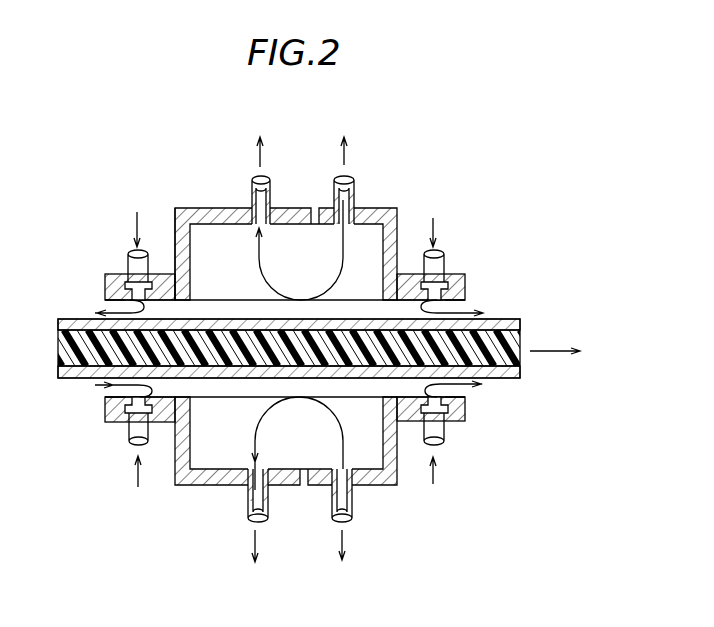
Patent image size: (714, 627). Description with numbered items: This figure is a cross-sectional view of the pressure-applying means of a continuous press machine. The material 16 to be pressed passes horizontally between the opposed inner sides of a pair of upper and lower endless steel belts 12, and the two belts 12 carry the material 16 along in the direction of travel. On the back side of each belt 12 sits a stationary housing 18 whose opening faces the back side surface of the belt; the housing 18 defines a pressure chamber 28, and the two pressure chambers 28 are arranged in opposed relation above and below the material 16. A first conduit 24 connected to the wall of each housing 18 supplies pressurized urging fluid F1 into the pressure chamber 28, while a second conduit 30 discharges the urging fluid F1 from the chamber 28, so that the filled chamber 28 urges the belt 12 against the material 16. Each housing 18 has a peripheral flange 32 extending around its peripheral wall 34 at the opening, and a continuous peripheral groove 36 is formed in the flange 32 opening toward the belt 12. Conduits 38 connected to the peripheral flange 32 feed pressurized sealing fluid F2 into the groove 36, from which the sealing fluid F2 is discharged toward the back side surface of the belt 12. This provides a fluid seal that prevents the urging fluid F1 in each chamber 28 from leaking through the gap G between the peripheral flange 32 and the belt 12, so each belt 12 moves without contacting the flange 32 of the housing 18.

The endless steel belt 12 is at (520, 320).
The material 16 is at (527, 343).
The housing 18 is at (203, 210).
The first conduit 24 is at (334, 200).
The pressure chamber 28 is at (243, 259).
The second conduit 30 is at (252, 196).
The peripheral flange 32 is at (118, 275).
The peripheral wall 34 is at (175, 238).
The peripheral groove 36 is at (120, 284).
The conduit 38 is at (148, 264).
The gap G is at (108, 305).
The pressurized urging fluid F1 is at (300, 351).
The pressurized sealing fluid F2 is at (286, 349).